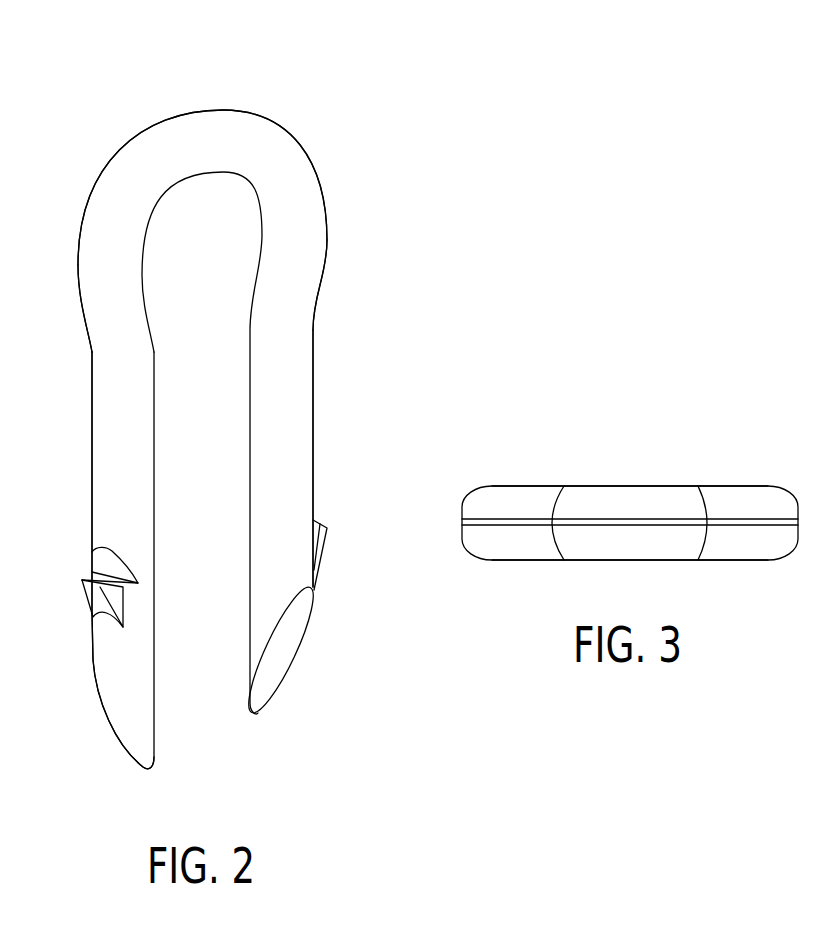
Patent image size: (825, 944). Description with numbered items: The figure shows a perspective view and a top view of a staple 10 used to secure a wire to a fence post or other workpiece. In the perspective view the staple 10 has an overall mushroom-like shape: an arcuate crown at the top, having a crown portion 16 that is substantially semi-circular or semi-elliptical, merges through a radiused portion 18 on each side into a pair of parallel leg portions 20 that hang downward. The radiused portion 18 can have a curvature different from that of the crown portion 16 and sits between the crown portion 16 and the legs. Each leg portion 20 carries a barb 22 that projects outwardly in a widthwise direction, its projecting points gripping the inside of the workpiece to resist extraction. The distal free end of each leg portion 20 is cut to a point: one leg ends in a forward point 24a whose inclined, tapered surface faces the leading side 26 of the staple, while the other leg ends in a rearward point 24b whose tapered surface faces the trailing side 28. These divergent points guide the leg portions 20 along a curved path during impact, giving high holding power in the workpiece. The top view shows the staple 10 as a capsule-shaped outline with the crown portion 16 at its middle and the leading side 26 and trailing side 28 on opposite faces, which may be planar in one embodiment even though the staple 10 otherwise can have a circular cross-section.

In FIG. 2, the staple 10 is at (362, 122).
In FIG. 3, the staple 10 is at (740, 428).
In FIG. 2, the crown portion 16 is at (325, 203).
In FIG. 3, the crown portion 16 is at (610, 503).
In FIG. 2, the radiused portion 18 is at (92, 352).
In FIG. 2, the leg portion 20 is at (92, 465).
In FIG. 2, the barb 22 is at (78, 580).
In FIG. 2, the forward point 24a is at (287, 647).
In FIG. 2, the rearward point 24b is at (100, 708).
In FIG. 3, the leading side 26 is at (522, 486).
In FIG. 3, the trailing side 28 is at (515, 560).